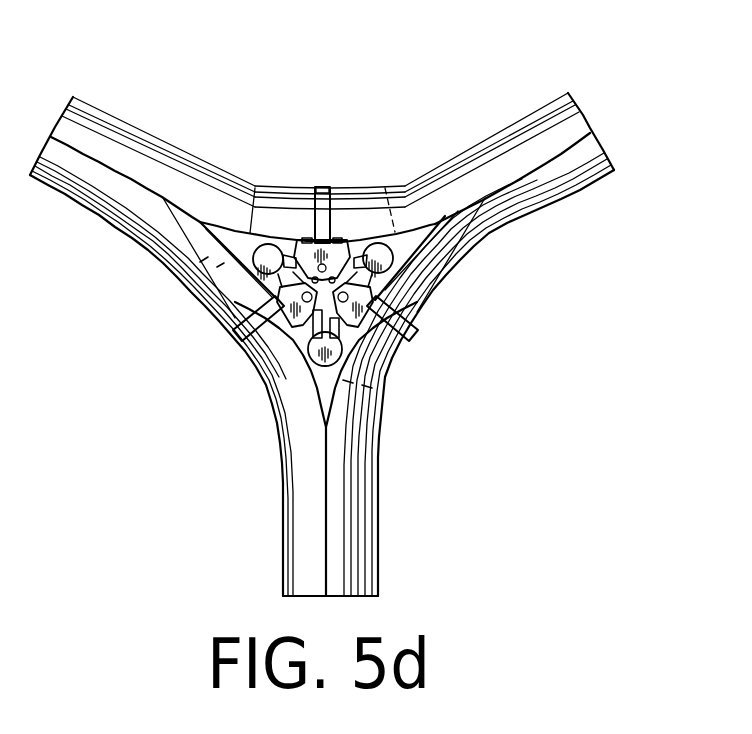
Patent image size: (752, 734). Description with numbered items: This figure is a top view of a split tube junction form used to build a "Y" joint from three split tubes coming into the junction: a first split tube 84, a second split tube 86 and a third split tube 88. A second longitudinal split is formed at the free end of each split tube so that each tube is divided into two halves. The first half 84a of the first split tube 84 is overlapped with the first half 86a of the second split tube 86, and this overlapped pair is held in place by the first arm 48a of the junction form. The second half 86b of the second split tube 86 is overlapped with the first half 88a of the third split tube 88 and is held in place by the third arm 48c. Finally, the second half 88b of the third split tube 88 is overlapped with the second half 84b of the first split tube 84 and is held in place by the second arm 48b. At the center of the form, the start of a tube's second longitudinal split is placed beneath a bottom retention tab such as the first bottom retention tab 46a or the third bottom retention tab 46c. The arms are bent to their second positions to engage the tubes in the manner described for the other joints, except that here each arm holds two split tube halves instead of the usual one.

The first bottom retention tab 46a is at (378, 358).
The third bottom retention tab 46c is at (386, 240).
The first arm 48a is at (235, 342).
The second arm 48b is at (411, 335).
The third arm 48c is at (319, 190).
The first split tube 84 is at (333, 555).
The first half of first split tube 84a is at (287, 403).
The second half of first split tube 84b is at (340, 412).
The second split tube 86 is at (80, 160).
The first half of second split tube 86a is at (207, 258).
The second half of second split tube 86b is at (198, 200).
The third split tube 88 is at (576, 163).
The first half of third split tube 88a is at (417, 234).
The second half of third split tube 88b is at (482, 236).